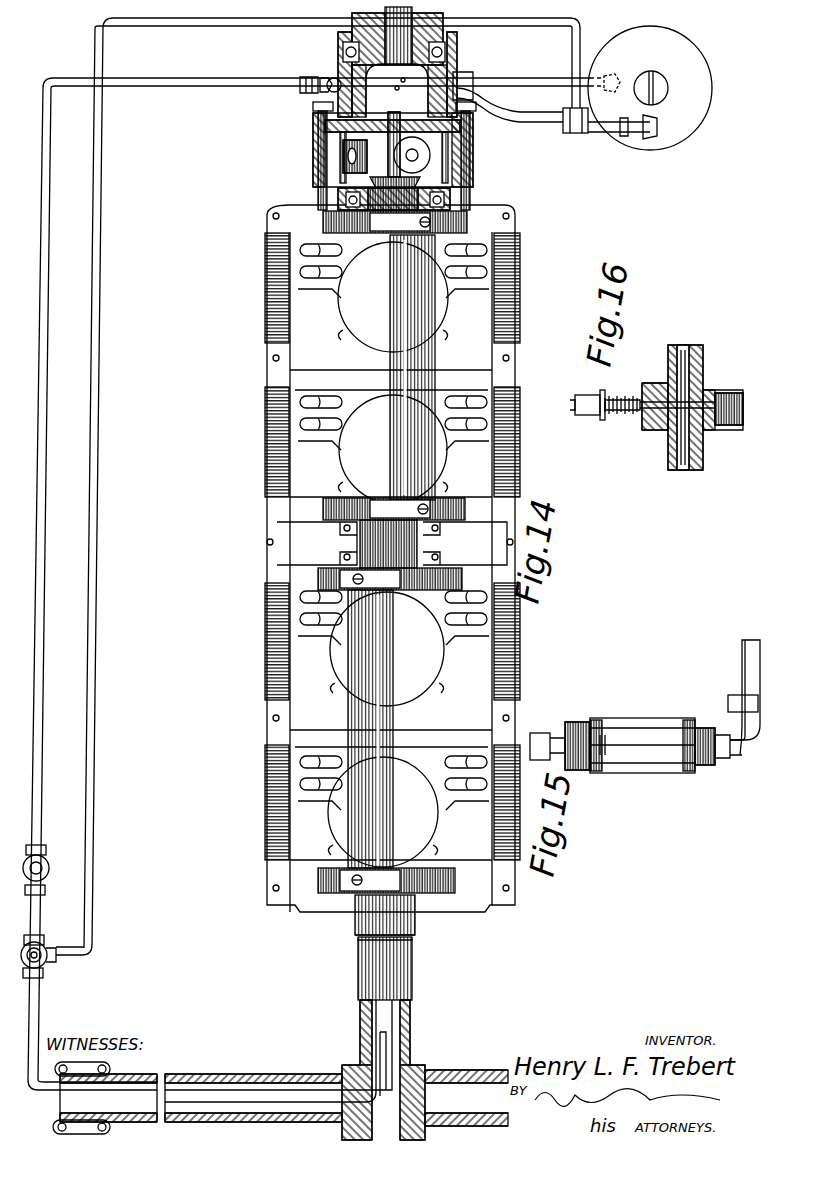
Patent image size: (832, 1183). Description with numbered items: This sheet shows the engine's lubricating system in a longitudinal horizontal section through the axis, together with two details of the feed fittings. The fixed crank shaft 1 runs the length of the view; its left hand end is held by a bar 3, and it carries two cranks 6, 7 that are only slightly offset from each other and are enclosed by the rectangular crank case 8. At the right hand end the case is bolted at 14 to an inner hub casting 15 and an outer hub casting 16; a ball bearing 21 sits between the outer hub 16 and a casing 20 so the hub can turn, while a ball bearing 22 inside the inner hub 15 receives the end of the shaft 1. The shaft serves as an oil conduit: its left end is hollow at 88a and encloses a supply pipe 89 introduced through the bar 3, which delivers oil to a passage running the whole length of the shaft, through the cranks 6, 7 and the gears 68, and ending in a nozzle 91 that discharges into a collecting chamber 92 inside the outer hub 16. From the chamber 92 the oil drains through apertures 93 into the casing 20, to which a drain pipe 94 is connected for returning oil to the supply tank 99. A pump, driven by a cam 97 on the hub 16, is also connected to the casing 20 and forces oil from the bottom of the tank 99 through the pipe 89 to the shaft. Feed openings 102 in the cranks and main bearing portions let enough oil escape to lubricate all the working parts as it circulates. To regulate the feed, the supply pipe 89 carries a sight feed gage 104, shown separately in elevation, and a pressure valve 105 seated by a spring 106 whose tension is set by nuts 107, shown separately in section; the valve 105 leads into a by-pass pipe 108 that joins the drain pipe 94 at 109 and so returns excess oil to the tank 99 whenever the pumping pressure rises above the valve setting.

In FIG. 14, the crank shaft 1 is at (380, 968).
In FIG. 14, the bar 3 is at (196, 1074).
In FIG. 14, the crank 6 is at (348, 700).
In FIG. 14, the crank 7 is at (398, 458).
In FIG. 14, the crank case 8 is at (465, 692).
In FIG. 14, the bolts 14 is at (314, 112).
In FIG. 14, the inner hub casting 15 is at (312, 160).
In FIG. 14, the outer hub casting 16 is at (470, 20).
In FIG. 14, the casing 20 is at (470, 105).
In FIG. 14, the ball bearing 21 is at (445, 48).
In FIG. 14, the ball bearing 22 is at (392, 232).
In FIG. 14, the gears 68 is at (455, 212).
In FIG. 14, the hollow end of crank shaft 88a is at (373, 1002).
In FIG. 14, the supply pipe 89 is at (300, 90).
In FIG. 15, the supply pipe 89 is at (537, 733).
In FIG. 14, the nozzle 91 is at (395, 140).
In FIG. 14, the collecting chamber 92 is at (440, 125).
In FIG. 14, the apertures 93 is at (397, 90).
In FIG. 14, the drain pipe 94 is at (512, 108).
In FIG. 14, the cam 97 is at (345, 82).
In FIG. 14, the supply tank 99 is at (632, 78).
In FIG. 14, the feed openings 102 is at (440, 470).
In FIG. 14, the sight feed gage 104 is at (45, 868).
In FIG. 15, the sight feed gage 104 is at (635, 725).
In FIG. 16, the pressure valve 105 is at (672, 385).
In FIG. 16, the spring 106 is at (615, 420).
In FIG. 16, the nuts 107 is at (585, 395).
In FIG. 14, the by-pass pipe 108 is at (310, 20).
In FIG. 14, the connection 109 is at (572, 133).